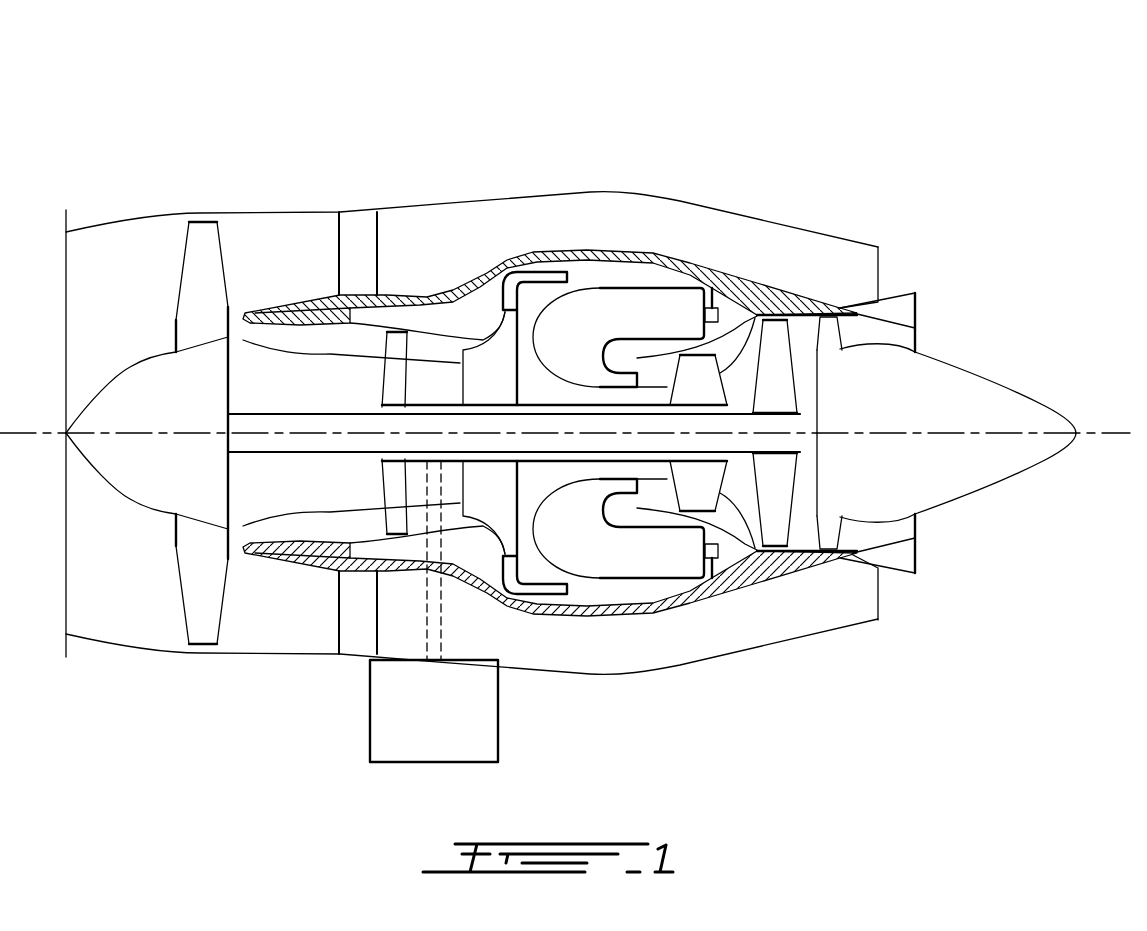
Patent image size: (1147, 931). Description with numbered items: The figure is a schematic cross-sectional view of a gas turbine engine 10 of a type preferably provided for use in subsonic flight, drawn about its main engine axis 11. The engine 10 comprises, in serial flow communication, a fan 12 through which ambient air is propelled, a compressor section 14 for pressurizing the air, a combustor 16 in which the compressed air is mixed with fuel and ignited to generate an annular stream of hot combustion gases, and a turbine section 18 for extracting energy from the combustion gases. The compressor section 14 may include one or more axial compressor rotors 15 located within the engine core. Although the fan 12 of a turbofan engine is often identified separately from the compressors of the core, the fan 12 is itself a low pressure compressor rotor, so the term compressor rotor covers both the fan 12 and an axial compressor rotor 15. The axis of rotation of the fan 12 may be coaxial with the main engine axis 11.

The gas turbine engine 10 is at (785, 98).
The main engine axis 11 is at (1105, 433).
The fan 12 is at (198, 570).
The compressor section 14 is at (433, 343).
The axial compressor rotor 15 is at (397, 330).
The combustor 16 is at (613, 310).
The turbine section 18 is at (738, 493).